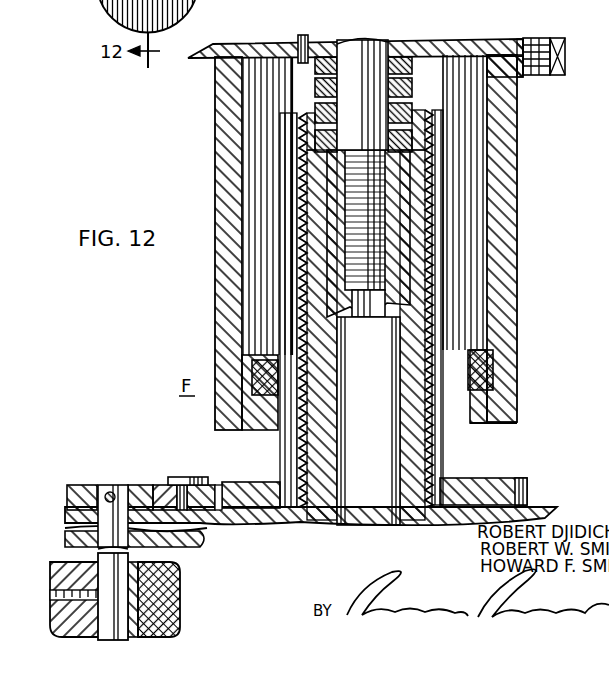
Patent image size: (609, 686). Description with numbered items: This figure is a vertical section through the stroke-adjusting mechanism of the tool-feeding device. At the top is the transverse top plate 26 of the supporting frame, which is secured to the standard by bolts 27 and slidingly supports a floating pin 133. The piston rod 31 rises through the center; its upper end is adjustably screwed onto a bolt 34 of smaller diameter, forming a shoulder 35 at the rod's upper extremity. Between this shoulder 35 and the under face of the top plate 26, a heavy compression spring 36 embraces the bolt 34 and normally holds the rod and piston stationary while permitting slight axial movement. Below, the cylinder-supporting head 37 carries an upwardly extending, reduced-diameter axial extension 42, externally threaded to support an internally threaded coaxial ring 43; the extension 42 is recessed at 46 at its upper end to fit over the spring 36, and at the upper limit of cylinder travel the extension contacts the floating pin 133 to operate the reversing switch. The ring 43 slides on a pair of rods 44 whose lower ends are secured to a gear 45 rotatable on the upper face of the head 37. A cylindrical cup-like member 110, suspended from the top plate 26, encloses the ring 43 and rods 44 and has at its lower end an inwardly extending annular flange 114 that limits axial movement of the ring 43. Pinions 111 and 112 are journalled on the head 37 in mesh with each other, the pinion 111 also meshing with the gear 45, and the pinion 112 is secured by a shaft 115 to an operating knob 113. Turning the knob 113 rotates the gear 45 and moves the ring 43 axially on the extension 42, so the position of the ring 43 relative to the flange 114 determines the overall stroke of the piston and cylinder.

The top plate 26 is at (495, 44).
The bolts 27 is at (565, 58).
The piston rod 31 is at (374, 431).
The bolt 34 is at (385, 36).
The shoulder 35 is at (400, 165).
The compression spring 36 is at (412, 85).
The cylinder-supporting head 37 is at (272, 523).
The axial extension 42 is at (423, 285).
The ring 43 is at (490, 358).
The rods 44 is at (283, 242).
The gear 45 is at (513, 478).
The recess 46 is at (435, 227).
The cup-like member 110 is at (513, 305).
The pinion 111 is at (160, 485).
The pinion 112 is at (135, 485).
The operating knob 113 is at (180, 583).
The annular flange 114 is at (497, 424).
The shaft 115 is at (100, 570).
The floating pin 133 is at (298, 37).